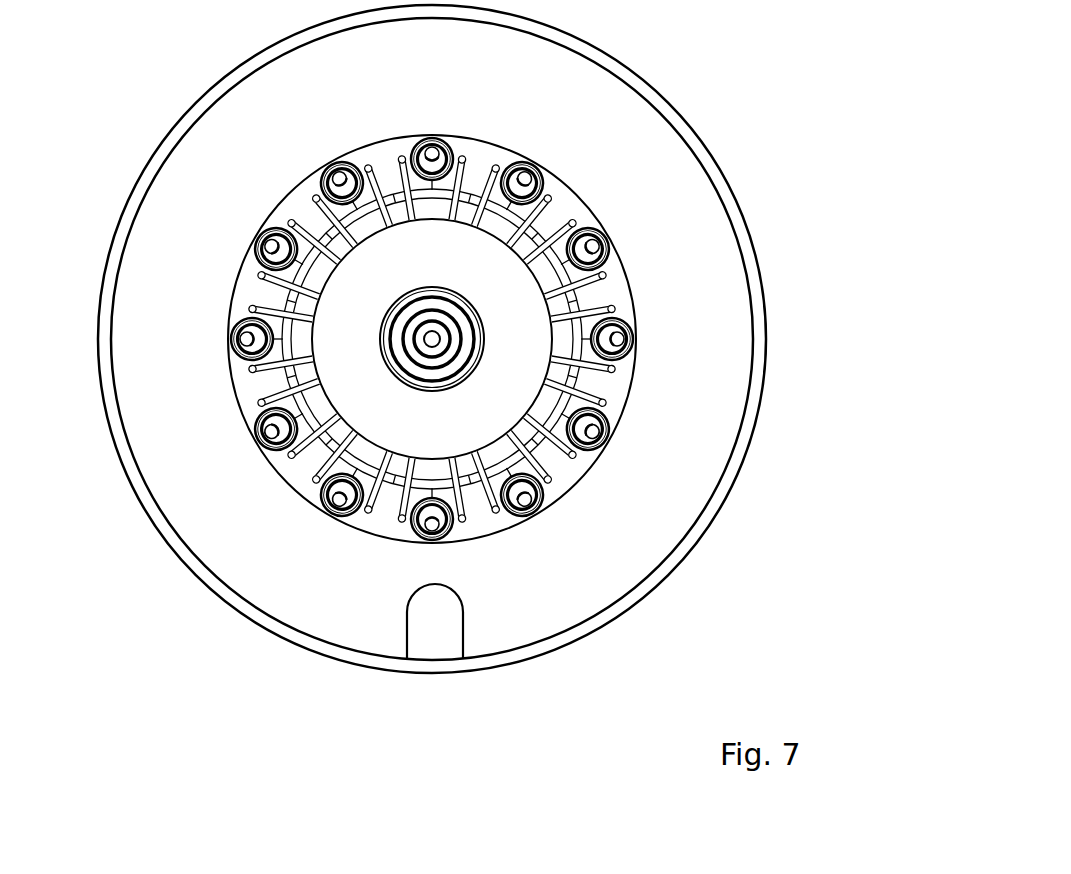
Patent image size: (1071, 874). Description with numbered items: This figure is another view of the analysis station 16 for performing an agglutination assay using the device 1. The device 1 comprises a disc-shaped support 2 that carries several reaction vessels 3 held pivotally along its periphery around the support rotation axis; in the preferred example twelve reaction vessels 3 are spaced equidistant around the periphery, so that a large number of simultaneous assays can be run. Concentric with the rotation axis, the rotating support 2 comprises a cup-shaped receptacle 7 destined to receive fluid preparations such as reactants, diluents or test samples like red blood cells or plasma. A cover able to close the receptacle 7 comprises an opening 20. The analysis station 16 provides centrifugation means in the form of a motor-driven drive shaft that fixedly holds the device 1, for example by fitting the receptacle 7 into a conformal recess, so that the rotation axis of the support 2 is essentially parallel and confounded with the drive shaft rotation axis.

The device 1 is at (586, 180).
The support 2 is at (508, 377).
The reaction vessels 3 is at (219, 329).
The cup-shaped receptacle 7 is at (369, 363).
The analysis station 16 is at (157, 705).
The opening 20 is at (593, 293).